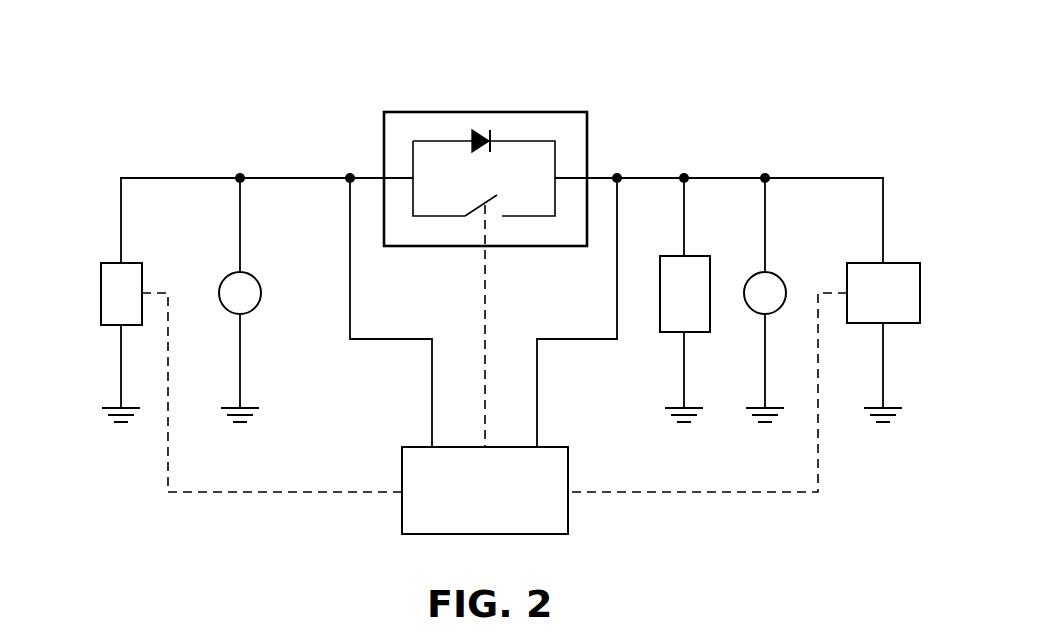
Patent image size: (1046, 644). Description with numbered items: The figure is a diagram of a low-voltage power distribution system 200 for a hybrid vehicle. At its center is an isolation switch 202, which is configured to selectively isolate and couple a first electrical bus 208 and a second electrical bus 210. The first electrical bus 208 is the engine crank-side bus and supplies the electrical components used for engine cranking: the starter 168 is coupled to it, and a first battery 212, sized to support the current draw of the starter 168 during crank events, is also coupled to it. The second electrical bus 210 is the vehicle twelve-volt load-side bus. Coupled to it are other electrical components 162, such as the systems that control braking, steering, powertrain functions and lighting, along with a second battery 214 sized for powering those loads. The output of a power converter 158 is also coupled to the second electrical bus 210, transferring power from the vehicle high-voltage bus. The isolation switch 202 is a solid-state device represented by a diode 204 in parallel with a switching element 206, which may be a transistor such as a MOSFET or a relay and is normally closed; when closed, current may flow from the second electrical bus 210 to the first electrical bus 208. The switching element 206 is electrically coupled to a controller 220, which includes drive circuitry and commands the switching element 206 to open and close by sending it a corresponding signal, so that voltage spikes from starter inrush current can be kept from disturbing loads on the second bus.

The power distribution system 200 is at (656, 66).
The isolation switch 202 is at (500, 112).
The diode 204 is at (486, 129).
The switching element 206 is at (476, 210).
The first electrical bus 208 is at (199, 178).
The second electrical bus 210 is at (797, 178).
The starter 168 is at (112, 263).
The first battery 212 is at (221, 285).
The electrical components 162 is at (692, 256).
The second battery 214 is at (783, 284).
The power converter 158 is at (893, 263).
The controller 220 is at (402, 472).